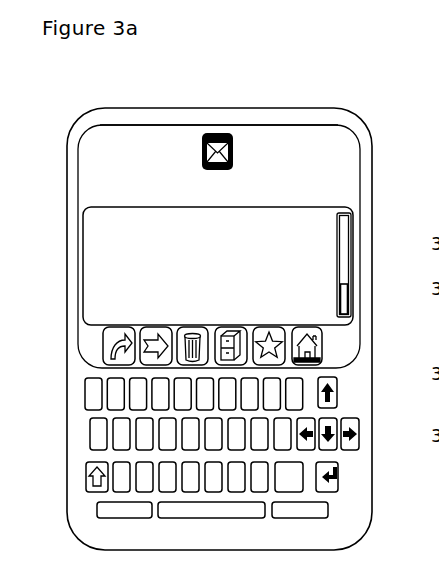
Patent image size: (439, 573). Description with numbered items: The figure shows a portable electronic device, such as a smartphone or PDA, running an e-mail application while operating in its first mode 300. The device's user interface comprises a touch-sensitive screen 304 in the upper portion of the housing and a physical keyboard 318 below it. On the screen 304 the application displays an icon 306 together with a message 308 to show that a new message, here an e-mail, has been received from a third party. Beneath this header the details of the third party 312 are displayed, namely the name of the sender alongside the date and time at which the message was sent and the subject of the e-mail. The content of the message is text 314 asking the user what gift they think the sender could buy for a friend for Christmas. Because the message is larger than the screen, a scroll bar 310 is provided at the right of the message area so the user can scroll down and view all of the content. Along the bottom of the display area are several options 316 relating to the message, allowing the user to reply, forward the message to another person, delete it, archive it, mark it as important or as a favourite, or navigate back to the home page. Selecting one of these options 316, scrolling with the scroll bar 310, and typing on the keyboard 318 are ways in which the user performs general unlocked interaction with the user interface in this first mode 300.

The portable electronic device operating in first mode 300 is at (107, 93).
The touch-sensitive screen 304 is at (162, 125).
The icon 306 is at (228, 132).
The message 308 is at (275, 175).
The scroll bar 310 is at (353, 266).
The details of the third party 312 is at (85, 235).
The text 314 is at (85, 302).
The options 316 is at (103, 345).
The physical keyboard 318 is at (88, 445).